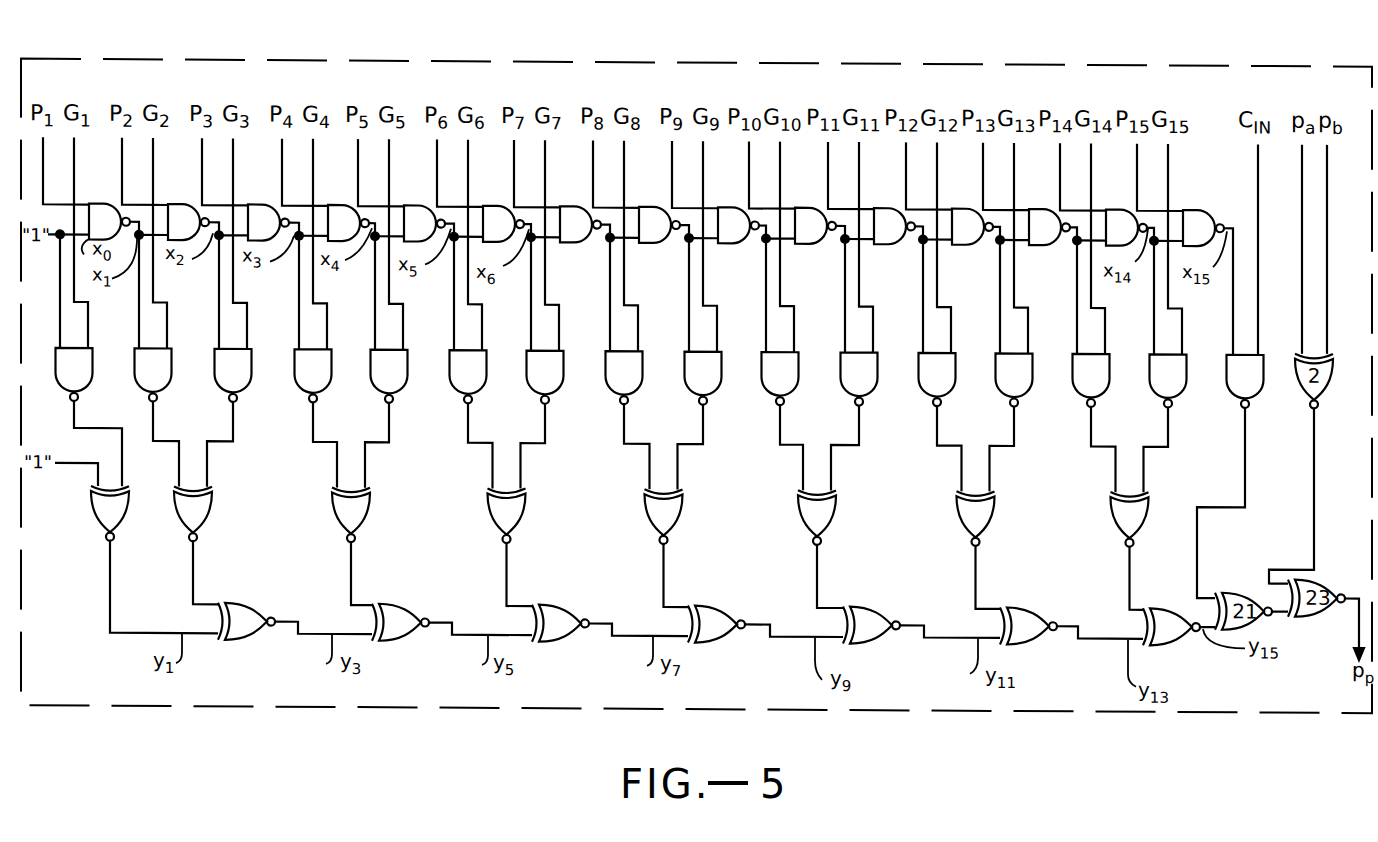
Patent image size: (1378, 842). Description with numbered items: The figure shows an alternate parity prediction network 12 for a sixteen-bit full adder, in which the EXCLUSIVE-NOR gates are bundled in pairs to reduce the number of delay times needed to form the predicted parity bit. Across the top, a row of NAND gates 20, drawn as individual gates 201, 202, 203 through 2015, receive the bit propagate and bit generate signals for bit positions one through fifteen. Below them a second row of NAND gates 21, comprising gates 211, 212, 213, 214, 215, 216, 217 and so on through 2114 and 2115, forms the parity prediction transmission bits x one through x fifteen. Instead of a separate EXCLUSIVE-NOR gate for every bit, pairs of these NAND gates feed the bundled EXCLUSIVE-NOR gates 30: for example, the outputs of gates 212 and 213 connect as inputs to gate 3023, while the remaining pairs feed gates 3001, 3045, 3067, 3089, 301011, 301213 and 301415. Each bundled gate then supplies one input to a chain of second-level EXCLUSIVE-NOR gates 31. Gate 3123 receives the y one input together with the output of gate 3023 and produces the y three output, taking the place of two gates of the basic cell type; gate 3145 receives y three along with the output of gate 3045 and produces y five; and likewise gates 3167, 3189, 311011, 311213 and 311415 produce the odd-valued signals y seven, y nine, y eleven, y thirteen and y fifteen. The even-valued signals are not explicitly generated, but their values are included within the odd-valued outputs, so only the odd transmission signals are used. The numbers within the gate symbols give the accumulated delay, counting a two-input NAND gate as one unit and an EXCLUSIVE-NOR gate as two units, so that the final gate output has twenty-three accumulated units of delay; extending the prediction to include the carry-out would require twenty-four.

The alternate prediction network 12 is at (190, 708).
The NAND gates 20 is at (652, 199).
The NAND gate 201 is at (89, 204).
The NAND gate 202 is at (169, 204).
The NAND gate 203 is at (249, 204).
The NAND gate 2015 is at (1190, 203).
The NAND gates 21 is at (660, 392).
The NAND gate 211 is at (82, 384).
The NAND gate 212 is at (161, 384).
The NAND gate 213 is at (241, 384).
The NAND gate 214 is at (321, 384).
The NAND gate 215 is at (397, 384).
The NAND gate 216 is at (476, 384).
The NAND gate 217 is at (553, 384).
The NAND gate 2114 is at (1099, 384).
The NAND gate 2115 is at (1176, 384).
The bundled EXCLUSIVE-NOR gates 30 is at (620, 530).
The EXCLUSIVE-NOR gate 3001 is at (114, 530).
The EXCLUSIVE-NOR gate 3023 is at (199, 518).
The EXCLUSIVE-NOR gate 3045 is at (362, 518).
The EXCLUSIVE-NOR gate 3067 is at (518, 518).
The EXCLUSIVE-NOR gate 3089 is at (675, 518).
The EXCLUSIVE-NOR gate 301011 is at (826, 520).
The EXCLUSIVE-NOR gate 301213 is at (987, 518).
The EXCLUSIVE-NOR gate 301415 is at (1111, 497).
The EXCLUSIVE-NOR gates 31 is at (729, 644).
The EXCLUSIVE-NOR gate 3123 is at (237, 639).
The EXCLUSIVE-NOR gate 3145 is at (388, 639).
The EXCLUSIVE-NOR gate 3167 is at (542, 639).
The EXCLUSIVE-NOR gate 3189 is at (700, 639).
The EXCLUSIVE-NOR gate 311011 is at (862, 639).
The EXCLUSIVE-NOR gate 311213 is at (1017, 637).
The EXCLUSIVE-NOR gate 311415 is at (1163, 638).